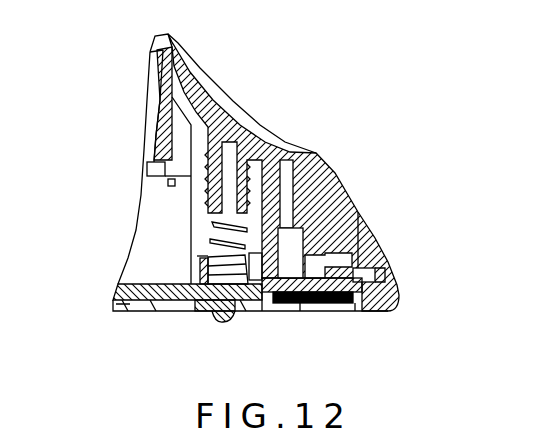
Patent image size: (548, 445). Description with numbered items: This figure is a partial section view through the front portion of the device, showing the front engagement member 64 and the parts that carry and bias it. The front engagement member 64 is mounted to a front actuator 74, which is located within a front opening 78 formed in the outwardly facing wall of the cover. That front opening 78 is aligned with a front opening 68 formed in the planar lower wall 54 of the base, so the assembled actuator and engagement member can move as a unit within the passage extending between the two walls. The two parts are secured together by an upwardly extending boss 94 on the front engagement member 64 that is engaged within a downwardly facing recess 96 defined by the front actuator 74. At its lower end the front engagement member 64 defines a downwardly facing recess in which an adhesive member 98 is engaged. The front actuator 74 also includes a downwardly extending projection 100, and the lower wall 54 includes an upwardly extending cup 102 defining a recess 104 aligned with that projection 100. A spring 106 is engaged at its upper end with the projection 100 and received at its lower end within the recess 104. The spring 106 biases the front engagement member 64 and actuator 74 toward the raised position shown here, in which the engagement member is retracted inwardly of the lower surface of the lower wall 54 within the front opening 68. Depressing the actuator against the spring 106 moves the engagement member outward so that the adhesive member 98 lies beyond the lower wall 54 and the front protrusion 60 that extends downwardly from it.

The lower wall 54 is at (198, 313).
The front protrusion 60 is at (218, 323).
The front engagement member 64 is at (368, 273).
The front opening 68 is at (354, 304).
The front actuator 74 is at (318, 152).
The front opening 78 is at (183, 62).
The boss 94 is at (303, 242).
The recess 96 is at (303, 231).
The adhesive member 98 is at (300, 304).
The projection 100 is at (163, 174).
The cup 102 is at (198, 259).
The recess 104 is at (210, 250).
The spring 106 is at (212, 222).